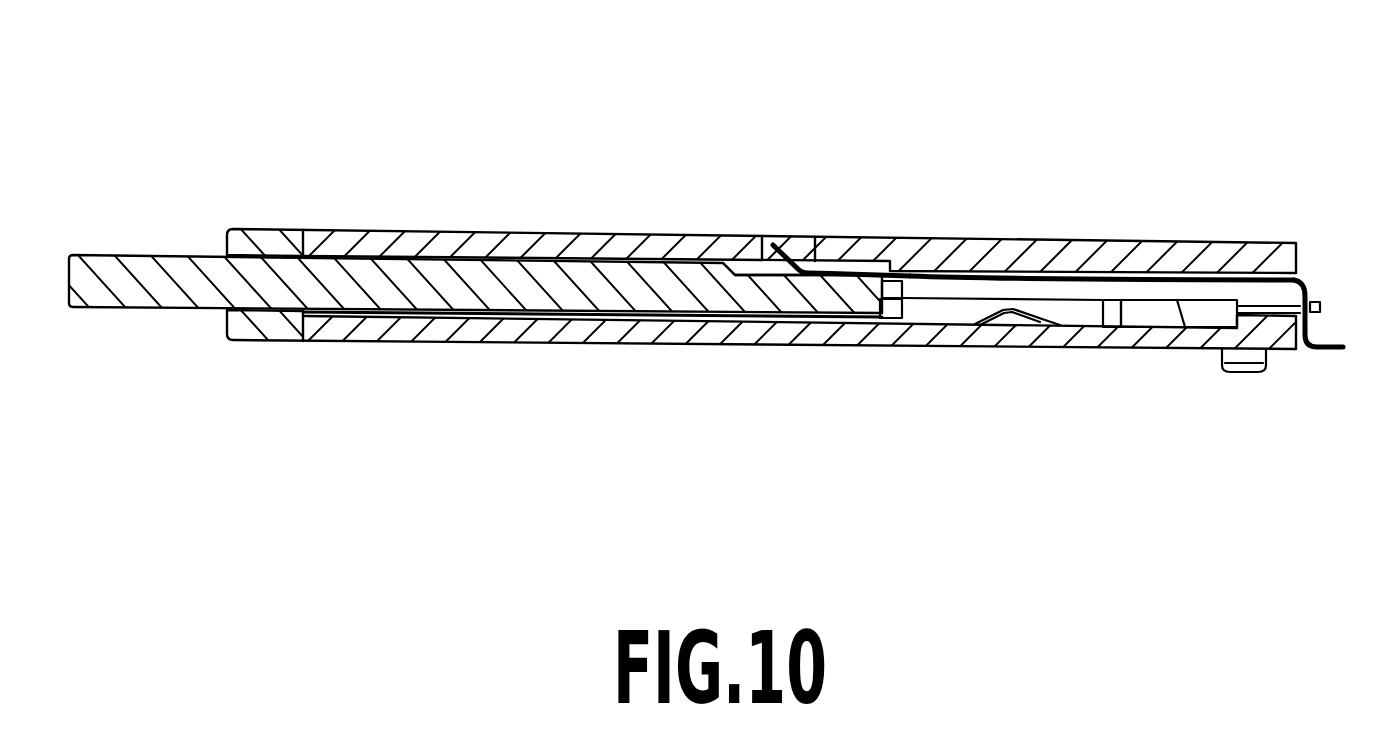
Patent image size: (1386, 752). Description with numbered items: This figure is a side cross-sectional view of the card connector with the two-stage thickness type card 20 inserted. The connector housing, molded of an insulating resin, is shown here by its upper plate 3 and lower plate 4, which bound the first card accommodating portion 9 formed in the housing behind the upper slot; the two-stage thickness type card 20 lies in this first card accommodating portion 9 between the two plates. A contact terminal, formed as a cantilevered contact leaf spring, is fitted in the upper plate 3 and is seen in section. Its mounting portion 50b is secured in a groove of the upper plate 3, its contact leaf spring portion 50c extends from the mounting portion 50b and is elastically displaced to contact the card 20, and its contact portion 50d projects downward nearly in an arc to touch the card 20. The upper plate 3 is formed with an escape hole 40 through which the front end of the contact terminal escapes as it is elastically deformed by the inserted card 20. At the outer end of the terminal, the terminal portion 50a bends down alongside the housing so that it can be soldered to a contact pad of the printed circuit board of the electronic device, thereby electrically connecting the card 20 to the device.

The upper plate 3 is at (513, 240).
The lower plate 4 is at (692, 345).
The first card accommodating portion 9 is at (749, 268).
The 2-stage thickness type card 20 is at (133, 262).
The escape hole 40 is at (797, 255).
The terminal portion 50a is at (1310, 280).
The mounting portion 50b is at (1122, 273).
The contact leaf spring portion 50c is at (897, 263).
The contact portion 50d is at (828, 265).